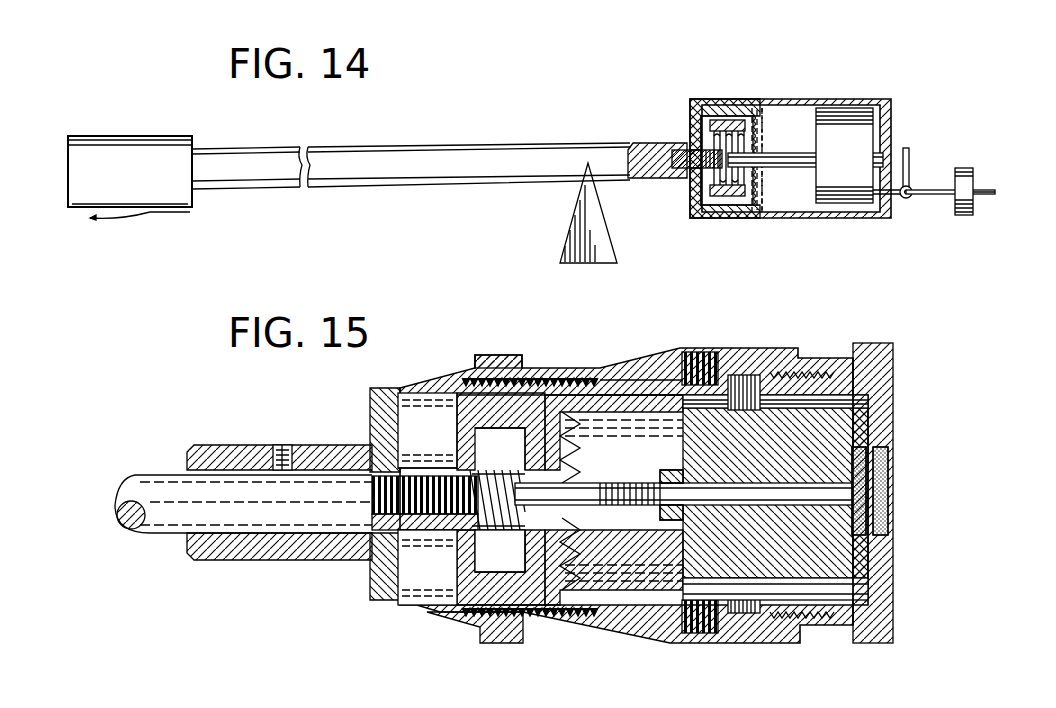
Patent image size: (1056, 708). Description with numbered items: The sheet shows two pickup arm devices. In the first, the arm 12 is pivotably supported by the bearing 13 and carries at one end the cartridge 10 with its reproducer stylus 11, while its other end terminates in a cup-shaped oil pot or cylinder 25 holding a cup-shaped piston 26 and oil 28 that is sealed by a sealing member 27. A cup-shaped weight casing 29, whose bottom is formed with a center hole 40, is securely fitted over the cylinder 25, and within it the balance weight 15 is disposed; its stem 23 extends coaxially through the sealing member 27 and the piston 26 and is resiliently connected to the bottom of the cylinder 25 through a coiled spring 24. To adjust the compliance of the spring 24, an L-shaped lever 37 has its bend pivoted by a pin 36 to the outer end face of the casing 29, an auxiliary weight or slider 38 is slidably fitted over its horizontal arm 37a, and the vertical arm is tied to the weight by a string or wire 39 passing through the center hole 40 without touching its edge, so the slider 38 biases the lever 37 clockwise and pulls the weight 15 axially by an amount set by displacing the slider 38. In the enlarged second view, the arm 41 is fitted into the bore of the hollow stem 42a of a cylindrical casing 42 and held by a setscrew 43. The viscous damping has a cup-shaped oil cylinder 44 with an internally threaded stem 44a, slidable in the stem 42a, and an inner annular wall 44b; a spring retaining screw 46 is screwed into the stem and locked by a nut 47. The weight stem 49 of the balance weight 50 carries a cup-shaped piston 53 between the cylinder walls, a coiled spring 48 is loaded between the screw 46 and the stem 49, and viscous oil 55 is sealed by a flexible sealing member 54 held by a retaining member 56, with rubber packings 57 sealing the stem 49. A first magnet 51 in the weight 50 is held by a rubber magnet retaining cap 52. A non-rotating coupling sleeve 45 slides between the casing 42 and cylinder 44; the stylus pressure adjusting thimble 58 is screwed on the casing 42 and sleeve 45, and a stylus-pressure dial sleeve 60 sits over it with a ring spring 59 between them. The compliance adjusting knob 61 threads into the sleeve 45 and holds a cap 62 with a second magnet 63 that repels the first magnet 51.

In FIG. 14, the cartridge 10 is at (126, 142).
In FIG. 14, the reproducer stylus 11 is at (94, 219).
In FIG. 14, the arm 12 is at (440, 158).
In FIG. 14, the bearing 13 is at (580, 242).
In FIG. 14, the balance weight 15 is at (825, 127).
In FIG. 14, the stem 23 is at (789, 167).
In FIG. 14, the coiled spring 24 is at (698, 183).
In FIG. 14, the oil pot or cylinder 25 is at (718, 108).
In FIG. 14, the cup-shaped piston 26 is at (722, 197).
In FIG. 14, the sealing member 27 is at (762, 138).
In FIG. 14, the oil 28 is at (702, 122).
In FIG. 14, the weight casing 29 is at (805, 101).
In FIG. 14, the pivot pin 36 is at (906, 198).
In FIG. 14, the L-shaped lever 37 is at (940, 190).
In FIG. 14, the horizontal arm 37a is at (995, 192).
In FIG. 14, the auxiliary weight or slider 38 is at (963, 216).
In FIG. 14, the string or wire 39 is at (905, 148).
In FIG. 14, the center hole 40 is at (875, 160).
In FIG. 15, the arm 41 is at (153, 516).
In FIG. 15, the cylindrical casing 42 is at (376, 426).
In FIG. 15, the hollow stem or reduced diameter portion 42a is at (232, 445).
In FIG. 15, the setscrew 43 is at (276, 445).
In FIG. 15, the oil pot or cylinder 44 is at (460, 411).
In FIG. 15, the stem 44a is at (437, 476).
In FIG. 15, the inner annular wall 44b is at (470, 549).
In FIG. 15, the coupling sleeve 45 is at (610, 388).
In FIG. 15, the spring retaining screw 46 is at (368, 487).
In FIG. 15, the nut 47 is at (372, 518).
In FIG. 15, the coiled spring 48 is at (480, 456).
In FIG. 15, the weight stem 49 is at (640, 509).
In FIG. 15, the balance weight 50 is at (690, 573).
In FIG. 15, the first magnet 51 is at (852, 515).
In FIG. 15, the magnet retaining cap 52 is at (846, 395).
In FIG. 15, the cup-shaped piston 53 is at (472, 563).
In FIG. 15, the sealing member 54 is at (580, 453).
In FIG. 15, the viscous oil 55 is at (586, 567).
In FIG. 15, the retaining member 56 is at (582, 406).
In FIG. 15, the rubber packings 57 is at (580, 527).
In FIG. 15, the stylus pressure adjusting thimble 58 is at (576, 370).
In FIG. 15, the ring spring 59 is at (496, 356).
In FIG. 15, the stylus-pressure dial sleeve 60 is at (500, 643).
In FIG. 15, the compliance adjusting knob 61 is at (875, 343).
In FIG. 15, the cap 62 is at (894, 415).
In FIG. 15, the second magnet 63 is at (890, 491).